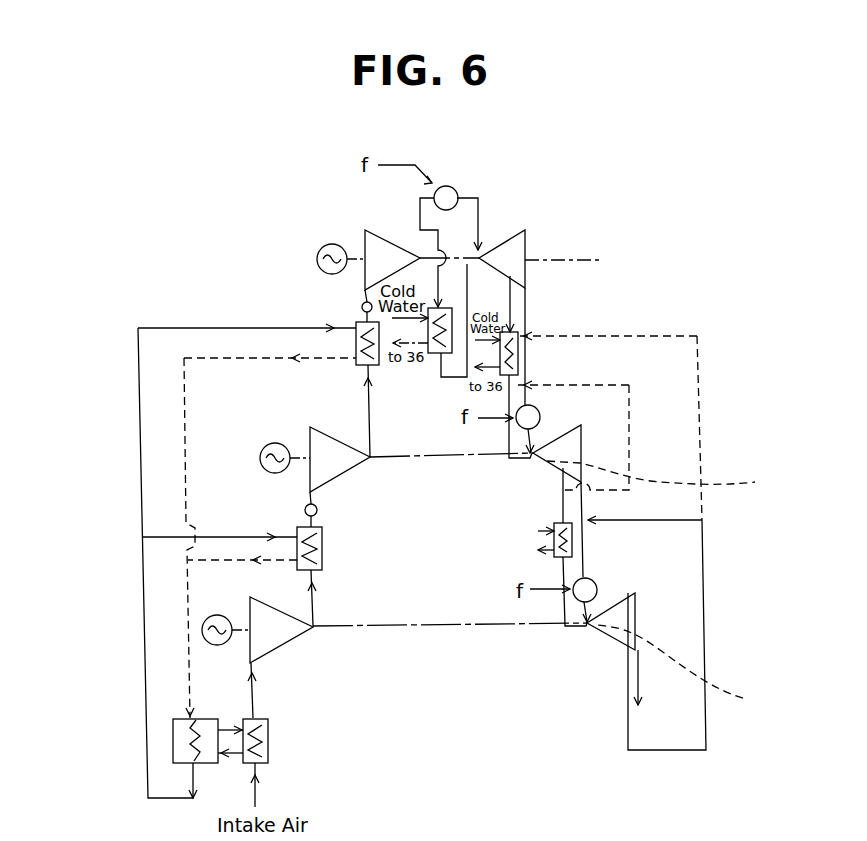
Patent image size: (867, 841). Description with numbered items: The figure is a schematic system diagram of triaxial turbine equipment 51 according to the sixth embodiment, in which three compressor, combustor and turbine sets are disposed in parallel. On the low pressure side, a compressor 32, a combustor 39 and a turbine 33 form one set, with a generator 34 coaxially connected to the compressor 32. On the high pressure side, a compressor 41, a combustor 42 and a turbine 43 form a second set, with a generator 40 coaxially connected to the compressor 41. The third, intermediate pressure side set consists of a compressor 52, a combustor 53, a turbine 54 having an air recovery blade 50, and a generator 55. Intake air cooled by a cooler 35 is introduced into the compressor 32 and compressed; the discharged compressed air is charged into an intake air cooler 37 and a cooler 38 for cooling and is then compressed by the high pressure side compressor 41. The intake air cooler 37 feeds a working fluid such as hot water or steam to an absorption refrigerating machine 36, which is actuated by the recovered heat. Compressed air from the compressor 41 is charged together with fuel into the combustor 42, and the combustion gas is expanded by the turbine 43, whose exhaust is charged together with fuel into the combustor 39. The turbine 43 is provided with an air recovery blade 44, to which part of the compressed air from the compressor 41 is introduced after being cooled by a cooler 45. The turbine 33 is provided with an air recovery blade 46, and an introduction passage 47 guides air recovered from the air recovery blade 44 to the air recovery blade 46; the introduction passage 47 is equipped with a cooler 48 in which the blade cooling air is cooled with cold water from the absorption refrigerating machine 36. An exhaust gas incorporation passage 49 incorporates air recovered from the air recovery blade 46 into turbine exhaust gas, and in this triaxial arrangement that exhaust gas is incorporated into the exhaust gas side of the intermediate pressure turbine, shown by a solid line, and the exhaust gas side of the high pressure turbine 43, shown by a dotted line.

The compressor 32 is at (278, 630).
The turbine 33 is at (637, 622).
The generator 34 is at (204, 625).
The cooler 35 is at (252, 718).
The absorption refrigerating machine 36 is at (173, 738).
The intake air cooler 37 is at (357, 323).
The cooler 38 is at (362, 306).
The combustor 39 is at (597, 585).
The generator 40 is at (317, 259).
The compressor 41 is at (365, 243).
The combustor 42 is at (455, 187).
The turbine 43 is at (517, 247).
The air recovery blade 44 is at (600, 260).
The cooler 45 is at (525, 295).
The air recovery blade 46 is at (687, 667).
The introduction passage 47 is at (510, 432).
The cooler 48 is at (518, 355).
The exhaust gas incorporation passage 49 is at (680, 750).
The air recovery blade 50 is at (668, 479).
The turbine equipment 51 is at (428, 638).
The compressor 52 is at (332, 436).
The combustor 53 is at (540, 412).
The turbine 54 is at (581, 452).
The generator 55 is at (260, 455).